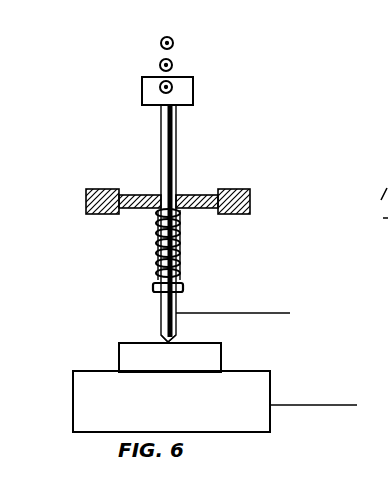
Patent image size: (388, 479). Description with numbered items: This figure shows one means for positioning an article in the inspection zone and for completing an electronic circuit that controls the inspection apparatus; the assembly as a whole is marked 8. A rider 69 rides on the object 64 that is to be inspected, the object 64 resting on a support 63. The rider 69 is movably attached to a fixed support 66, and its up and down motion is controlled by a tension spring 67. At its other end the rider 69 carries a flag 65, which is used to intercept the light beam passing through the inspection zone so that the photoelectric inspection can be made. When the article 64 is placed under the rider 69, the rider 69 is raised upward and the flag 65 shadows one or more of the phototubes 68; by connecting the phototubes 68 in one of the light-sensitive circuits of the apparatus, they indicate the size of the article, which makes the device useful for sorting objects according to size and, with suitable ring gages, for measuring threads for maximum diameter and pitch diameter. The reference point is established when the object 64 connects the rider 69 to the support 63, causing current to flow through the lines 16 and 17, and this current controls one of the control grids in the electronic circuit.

The assembly 8 is at (96, 125).
The flag 65 is at (193, 95).
The phototubes 68 is at (175, 84).
The object to be inspected 64 is at (170, 238).
The support 66 is at (141, 195).
The tension spring 67 is at (181, 248).
The rider 69 is at (160, 338).
The line 16 is at (245, 313).
The support 63 is at (171, 401).
The line 17 is at (310, 389).